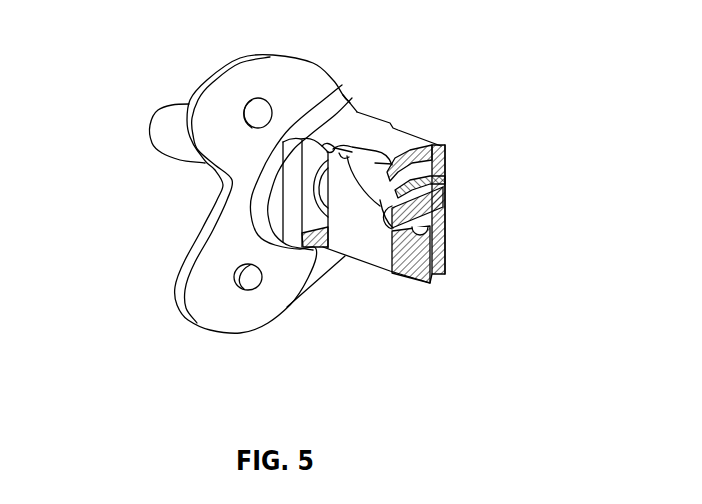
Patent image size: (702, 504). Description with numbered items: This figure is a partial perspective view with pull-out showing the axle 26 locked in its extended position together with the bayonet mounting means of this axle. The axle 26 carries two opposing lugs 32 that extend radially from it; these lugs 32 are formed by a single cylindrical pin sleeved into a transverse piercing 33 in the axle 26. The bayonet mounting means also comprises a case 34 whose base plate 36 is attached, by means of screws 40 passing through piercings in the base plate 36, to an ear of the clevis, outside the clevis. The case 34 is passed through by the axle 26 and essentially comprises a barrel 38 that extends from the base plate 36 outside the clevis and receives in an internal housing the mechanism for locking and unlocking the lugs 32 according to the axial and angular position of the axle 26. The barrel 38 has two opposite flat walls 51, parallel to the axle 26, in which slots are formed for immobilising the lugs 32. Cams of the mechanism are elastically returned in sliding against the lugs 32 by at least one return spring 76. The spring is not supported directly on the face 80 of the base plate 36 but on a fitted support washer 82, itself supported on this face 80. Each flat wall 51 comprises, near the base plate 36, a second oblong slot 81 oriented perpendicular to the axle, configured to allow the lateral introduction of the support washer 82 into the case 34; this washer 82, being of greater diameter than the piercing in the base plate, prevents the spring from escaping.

The axle 26 is at (173, 105).
The lugs 32 is at (404, 222).
The transverse piercing 33 is at (447, 217).
The case 34 is at (447, 225).
The base plate 36 is at (237, 86).
The barrel 38 is at (368, 128).
The screws 40 is at (250, 107).
The flat walls 51 is at (357, 253).
The return spring 76 is at (396, 168).
The face 80 is at (312, 258).
The second oblong slot 81 is at (357, 111).
The support washer 82 is at (327, 194).